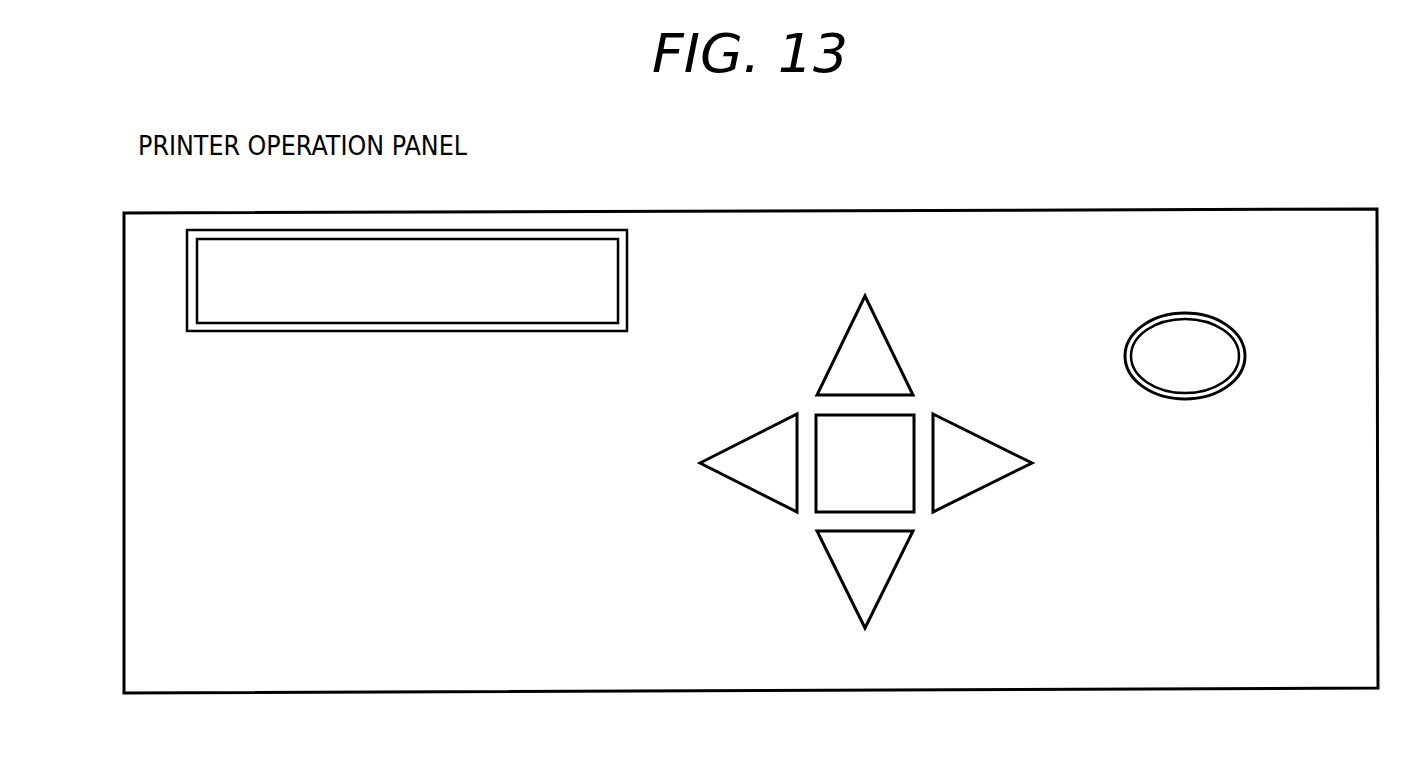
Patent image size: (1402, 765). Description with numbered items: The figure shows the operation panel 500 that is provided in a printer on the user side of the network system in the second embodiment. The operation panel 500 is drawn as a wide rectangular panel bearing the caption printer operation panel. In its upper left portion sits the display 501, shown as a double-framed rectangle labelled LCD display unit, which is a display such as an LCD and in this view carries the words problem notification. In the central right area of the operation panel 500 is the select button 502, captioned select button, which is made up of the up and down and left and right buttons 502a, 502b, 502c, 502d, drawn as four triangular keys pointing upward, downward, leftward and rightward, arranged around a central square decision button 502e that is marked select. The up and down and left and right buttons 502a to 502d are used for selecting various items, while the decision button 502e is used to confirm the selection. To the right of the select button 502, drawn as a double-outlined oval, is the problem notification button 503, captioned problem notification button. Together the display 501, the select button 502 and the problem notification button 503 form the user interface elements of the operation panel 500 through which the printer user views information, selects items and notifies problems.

The operation panel 500 is at (1198, 208).
The display 501 is at (340, 333).
The select button 502 is at (942, 473).
The up button 502a is at (892, 347).
The down button 502b is at (882, 598).
The left button 502c is at (750, 492).
The right button 502d is at (997, 483).
The decision button 502e is at (913, 423).
The problem notification button 503 is at (1183, 402).